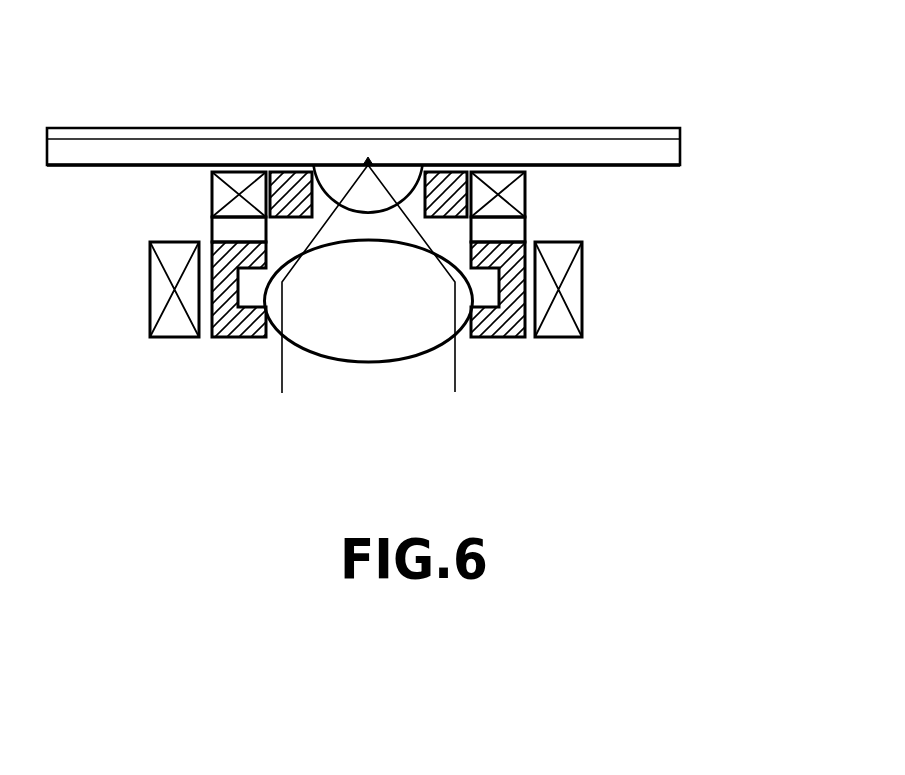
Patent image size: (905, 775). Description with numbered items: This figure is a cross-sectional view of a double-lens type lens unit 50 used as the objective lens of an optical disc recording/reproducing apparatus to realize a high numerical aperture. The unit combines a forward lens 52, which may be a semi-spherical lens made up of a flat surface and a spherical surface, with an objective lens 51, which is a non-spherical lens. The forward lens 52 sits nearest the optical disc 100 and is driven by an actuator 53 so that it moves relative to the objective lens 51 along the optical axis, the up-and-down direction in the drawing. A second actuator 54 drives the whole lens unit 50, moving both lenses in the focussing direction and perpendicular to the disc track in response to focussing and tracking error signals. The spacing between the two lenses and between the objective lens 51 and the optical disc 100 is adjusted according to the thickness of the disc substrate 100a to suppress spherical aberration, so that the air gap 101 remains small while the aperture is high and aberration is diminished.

The double-lens type lens unit 50 is at (240, 376).
The objective lens 51 is at (350, 345).
The forward lens 52 is at (405, 178).
The actuator 53 is at (525, 190).
The actuator 54 is at (570, 290).
The optical disc 100 is at (618, 133).
The disc substrate 100a is at (673, 149).
The air gap 101 is at (315, 180).